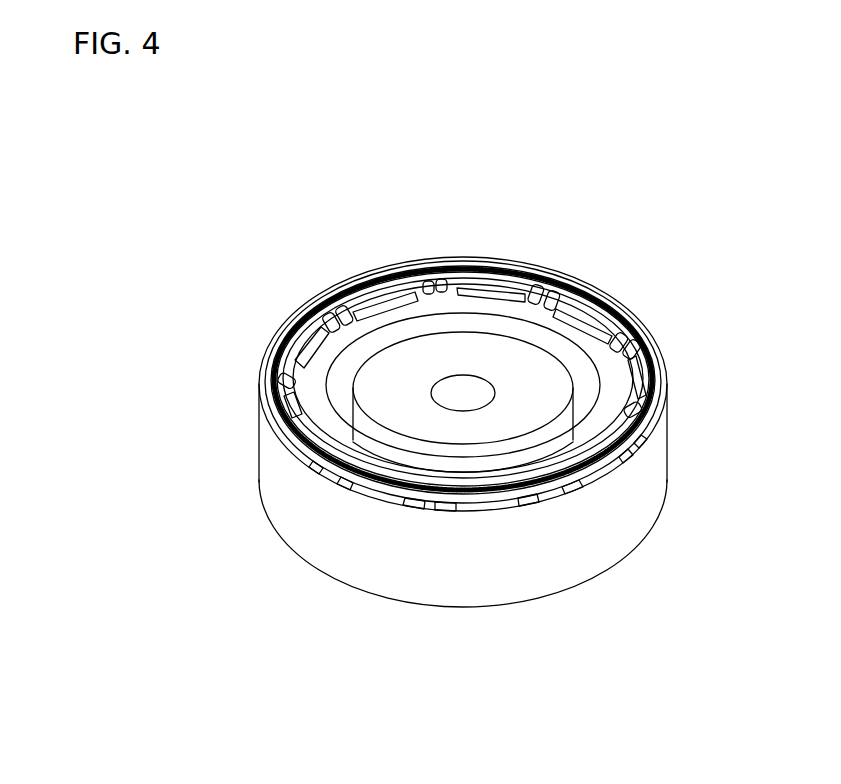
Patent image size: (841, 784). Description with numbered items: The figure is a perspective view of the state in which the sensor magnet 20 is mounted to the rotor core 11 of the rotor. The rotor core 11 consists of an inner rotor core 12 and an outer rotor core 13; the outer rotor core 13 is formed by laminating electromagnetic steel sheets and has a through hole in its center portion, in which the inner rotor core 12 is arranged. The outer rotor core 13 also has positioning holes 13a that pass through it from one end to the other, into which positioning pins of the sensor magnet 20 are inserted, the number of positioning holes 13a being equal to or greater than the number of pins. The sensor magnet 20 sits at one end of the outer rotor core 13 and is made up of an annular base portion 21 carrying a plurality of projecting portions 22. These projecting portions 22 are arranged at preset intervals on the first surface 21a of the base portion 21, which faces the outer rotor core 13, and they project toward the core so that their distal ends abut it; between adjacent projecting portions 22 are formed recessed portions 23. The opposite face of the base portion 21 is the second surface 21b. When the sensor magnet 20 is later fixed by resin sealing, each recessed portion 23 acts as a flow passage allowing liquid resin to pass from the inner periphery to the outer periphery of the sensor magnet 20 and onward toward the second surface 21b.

The rotor core 11 is at (508, 697).
The inner rotor core 12 is at (497, 440).
The outer rotor core 13 is at (578, 523).
The positioning holes 13a is at (344, 281).
The sensor magnet 20 is at (613, 297).
The base portion 21 is at (560, 271).
The first surface 21a is at (441, 500).
The second surface 21b is at (525, 270).
The projecting portions 22 is at (363, 497).
The recessed portions 23 is at (323, 480).